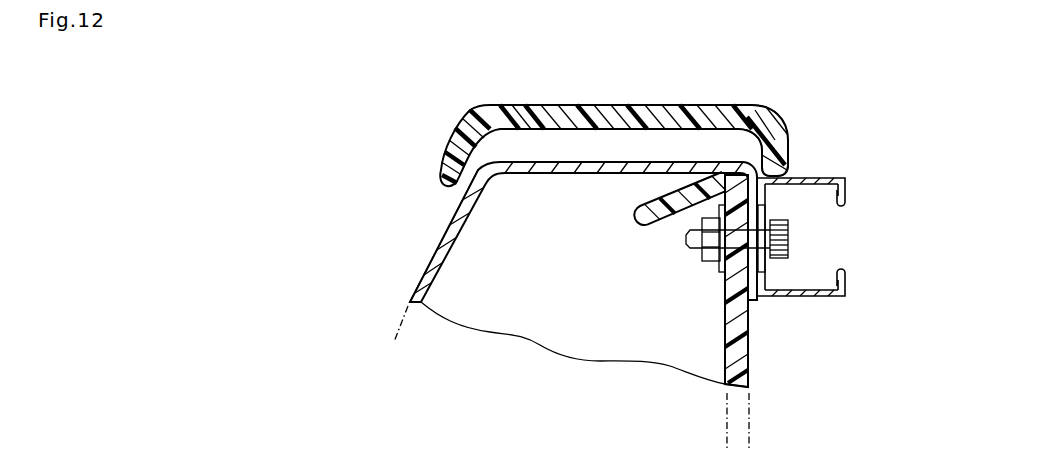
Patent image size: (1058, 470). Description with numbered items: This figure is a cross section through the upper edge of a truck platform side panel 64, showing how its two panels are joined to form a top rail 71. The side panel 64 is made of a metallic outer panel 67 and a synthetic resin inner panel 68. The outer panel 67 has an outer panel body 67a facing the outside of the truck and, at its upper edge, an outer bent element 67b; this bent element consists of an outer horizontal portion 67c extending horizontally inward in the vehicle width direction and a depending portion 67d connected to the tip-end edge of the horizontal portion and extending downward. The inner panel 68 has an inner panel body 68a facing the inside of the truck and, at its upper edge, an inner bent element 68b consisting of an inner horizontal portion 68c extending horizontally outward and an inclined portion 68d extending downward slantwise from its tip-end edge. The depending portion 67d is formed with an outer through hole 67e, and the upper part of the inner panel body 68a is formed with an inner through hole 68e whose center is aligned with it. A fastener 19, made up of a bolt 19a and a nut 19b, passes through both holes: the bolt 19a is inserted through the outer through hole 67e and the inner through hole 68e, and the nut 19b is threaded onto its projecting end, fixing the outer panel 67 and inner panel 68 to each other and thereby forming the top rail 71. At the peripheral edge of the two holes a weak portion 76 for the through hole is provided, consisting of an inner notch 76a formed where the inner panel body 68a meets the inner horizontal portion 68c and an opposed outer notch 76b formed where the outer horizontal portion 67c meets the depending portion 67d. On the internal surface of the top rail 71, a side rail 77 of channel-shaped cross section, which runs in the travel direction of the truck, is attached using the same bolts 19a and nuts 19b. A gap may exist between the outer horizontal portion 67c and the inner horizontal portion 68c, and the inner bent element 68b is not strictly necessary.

The top rail 71 is at (527, 157).
The weak portion for through hole 76 is at (814, 140).
The inner notch 76a is at (770, 143).
The outer notch 76b is at (765, 162).
The side rail 77 is at (848, 194).
The side panel 64 is at (433, 230).
The outer panel 67 is at (422, 267).
The outer panel body 67a is at (405, 291).
The outer bent element 67b is at (552, 157).
The outer horizontal portion 67c is at (635, 157).
The depending portion 67d is at (752, 300).
The outer through hole 67e is at (773, 236).
The inner panel 68 is at (752, 352).
The inner panel body 68a is at (752, 379).
The inner bent element 68b is at (606, 307).
The inner horizontal portion 68c is at (688, 206).
The inclined portion 68d is at (638, 225).
The inner through hole 68e is at (684, 243).
The fastener 19 is at (678, 328).
The bolt 19a is at (706, 262).
The nut 19b is at (720, 272).